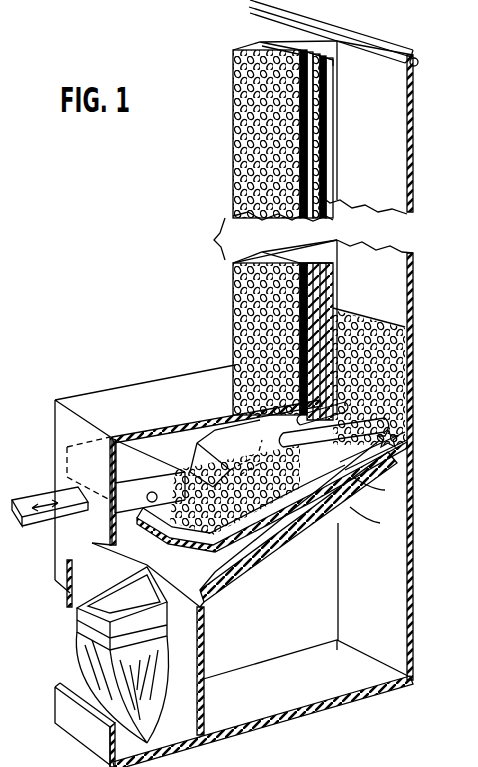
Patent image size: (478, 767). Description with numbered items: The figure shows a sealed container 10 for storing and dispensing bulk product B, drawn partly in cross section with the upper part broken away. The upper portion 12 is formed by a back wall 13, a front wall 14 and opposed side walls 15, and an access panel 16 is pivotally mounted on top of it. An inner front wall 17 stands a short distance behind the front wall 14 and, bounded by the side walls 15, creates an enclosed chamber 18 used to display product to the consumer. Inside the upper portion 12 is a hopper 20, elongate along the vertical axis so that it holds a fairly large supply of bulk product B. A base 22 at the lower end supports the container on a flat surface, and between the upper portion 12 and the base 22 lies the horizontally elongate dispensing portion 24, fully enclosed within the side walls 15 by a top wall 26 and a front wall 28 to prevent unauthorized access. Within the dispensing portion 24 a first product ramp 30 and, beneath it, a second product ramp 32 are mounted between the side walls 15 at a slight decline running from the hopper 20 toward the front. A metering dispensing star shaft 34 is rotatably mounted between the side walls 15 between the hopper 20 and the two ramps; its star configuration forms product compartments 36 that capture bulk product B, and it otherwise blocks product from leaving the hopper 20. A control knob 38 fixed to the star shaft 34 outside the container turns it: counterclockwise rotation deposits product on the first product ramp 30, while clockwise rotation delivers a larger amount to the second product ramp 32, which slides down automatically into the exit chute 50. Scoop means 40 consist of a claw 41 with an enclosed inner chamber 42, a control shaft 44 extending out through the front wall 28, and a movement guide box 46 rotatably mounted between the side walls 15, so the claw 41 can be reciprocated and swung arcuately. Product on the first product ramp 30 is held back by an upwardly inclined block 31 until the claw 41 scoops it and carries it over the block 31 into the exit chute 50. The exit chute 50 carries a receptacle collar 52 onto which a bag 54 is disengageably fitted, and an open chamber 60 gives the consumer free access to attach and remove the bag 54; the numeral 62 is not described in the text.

The sealed container 10 is at (430, 127).
The upper portion 12 is at (226, 122).
The back wall 13 is at (380, 108).
The front wall 14 is at (233, 182).
The opposed side walls 15 is at (300, 44).
The access panel 16 is at (352, 28).
The inner front wall 17 is at (327, 183).
The enclosed chamber 18 is at (330, 79).
The hopper 20 is at (388, 272).
The base 22 is at (318, 700).
The dispensing portion 24 is at (126, 449).
The top wall 26 is at (160, 382).
The front wall 28 is at (57, 421).
The first product ramp 30 is at (385, 490).
The upwardly inclined block 31 is at (150, 520).
The second product ramp 32 is at (380, 523).
The metering dispensing star shaft 34 is at (400, 460).
The product compartments 36 is at (400, 417).
The control knob 38 is at (407, 440).
The scoop means 40 is at (273, 527).
The claw 41 is at (207, 452).
The inner chamber 42 is at (195, 455).
The control shaft 44 is at (30, 500).
The movement guide box 46 is at (147, 471).
The exit chute 50 is at (92, 543).
The receptacle collar 52 is at (77, 608).
The bag 54 is at (77, 653).
The open chamber 60 is at (100, 730).
The base member 62 is at (362, 703).
The bulk product B is at (397, 358).